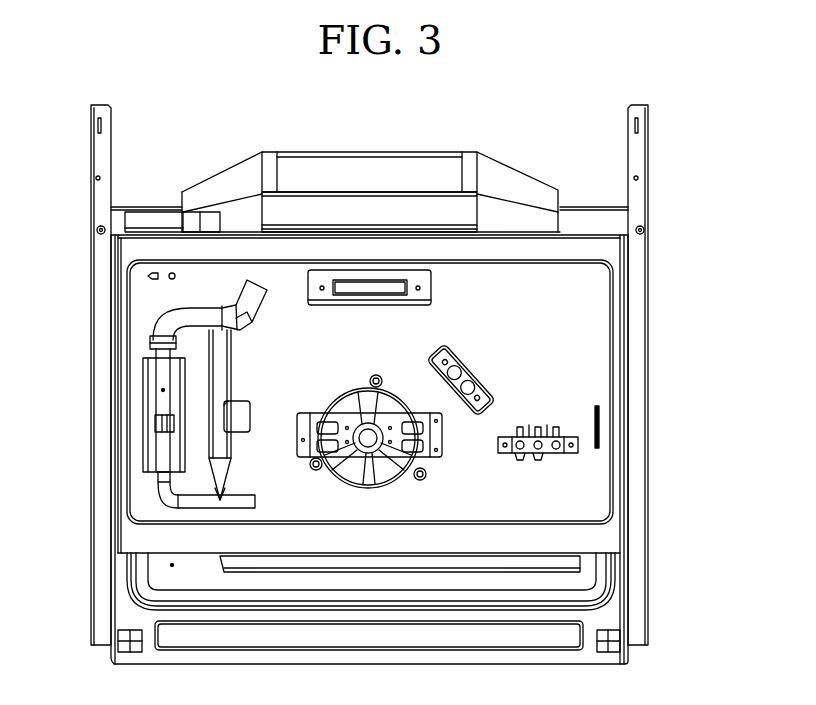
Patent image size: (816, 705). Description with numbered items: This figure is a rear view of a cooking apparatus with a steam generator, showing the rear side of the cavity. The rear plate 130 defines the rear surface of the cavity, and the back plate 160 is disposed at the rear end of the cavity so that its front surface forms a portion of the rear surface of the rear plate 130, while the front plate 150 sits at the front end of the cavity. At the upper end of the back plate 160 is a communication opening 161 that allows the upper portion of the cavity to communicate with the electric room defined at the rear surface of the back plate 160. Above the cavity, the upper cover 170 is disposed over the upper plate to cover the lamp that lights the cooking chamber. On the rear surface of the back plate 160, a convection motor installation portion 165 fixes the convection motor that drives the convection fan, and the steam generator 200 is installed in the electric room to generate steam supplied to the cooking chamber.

The rear plate 130 is at (580, 566).
The front plate 150 is at (608, 620).
The back plate 160 is at (585, 248).
The communication opening 161 is at (362, 291).
The convection motor installation portion 165 is at (390, 452).
The upper cover 170 is at (512, 170).
The steam generator 200 is at (148, 313).